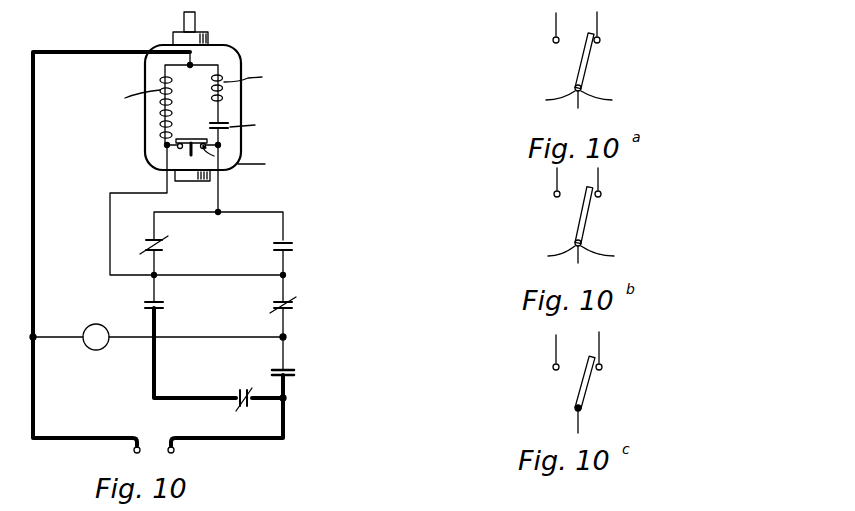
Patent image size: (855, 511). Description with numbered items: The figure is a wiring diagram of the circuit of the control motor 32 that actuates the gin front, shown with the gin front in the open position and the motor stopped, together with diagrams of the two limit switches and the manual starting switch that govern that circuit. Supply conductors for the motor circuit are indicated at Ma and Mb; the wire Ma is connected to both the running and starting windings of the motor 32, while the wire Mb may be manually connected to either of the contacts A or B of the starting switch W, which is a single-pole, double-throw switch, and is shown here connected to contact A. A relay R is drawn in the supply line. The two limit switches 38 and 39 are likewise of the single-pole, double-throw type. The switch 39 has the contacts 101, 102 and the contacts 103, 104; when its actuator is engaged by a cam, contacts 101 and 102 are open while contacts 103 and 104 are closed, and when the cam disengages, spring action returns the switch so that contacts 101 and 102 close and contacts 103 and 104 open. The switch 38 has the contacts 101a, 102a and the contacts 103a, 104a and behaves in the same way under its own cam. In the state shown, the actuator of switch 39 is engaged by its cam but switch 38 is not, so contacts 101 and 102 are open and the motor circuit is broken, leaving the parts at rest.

In FIG. 10, the capacitor-start motor 32 is at (237, 53).
In FIG. 10, the limit switch 39 is at (170, 247).
In FIG. 10A, the limit switch 39 is at (634, 75).
In FIG. 10, the limit switch 38 is at (304, 240).
In FIG. 10B, the limit switch 38 is at (626, 238).
In FIG. 10, the contact 103 is at (132, 220).
In FIG. 10A, the contact 103 is at (528, 28).
In FIG. 10, the contact 104 is at (132, 263).
In FIG. 10A, the contact 104 is at (613, 100).
In FIG. 10, the contact 101 is at (171, 295).
In FIG. 10A, the contact 101 is at (536, 100).
In FIG. 10, the contact 102 is at (182, 323).
In FIG. 10A, the contact 102 is at (617, 28).
In FIG. 10, the contact 103a is at (254, 228).
In FIG. 10B, the contact 103a is at (526, 185).
In FIG. 10, the contact 104a is at (254, 261).
In FIG. 10B, the contact 104a is at (614, 255).
In FIG. 10, the contact 101a is at (266, 295).
In FIG. 10B, the contact 101a is at (533, 255).
In FIG. 10, the contact 102a is at (252, 321).
In FIG. 10B, the contact 102a is at (620, 185).
In FIG. 10, the relay coil R is at (80, 325).
In FIG. 10, the contact A is at (226, 412).
In FIG. 10C, the contact A is at (540, 355).
In FIG. 10, the contact B is at (298, 364).
In FIG. 10C, the contact B is at (610, 354).
In FIG. 10C, the manually actuatable starting switch W is at (643, 388).
In FIG. 10, the supply conductor Ma is at (61, 446).
In FIG. 10, the supply conductor Mb is at (262, 443).